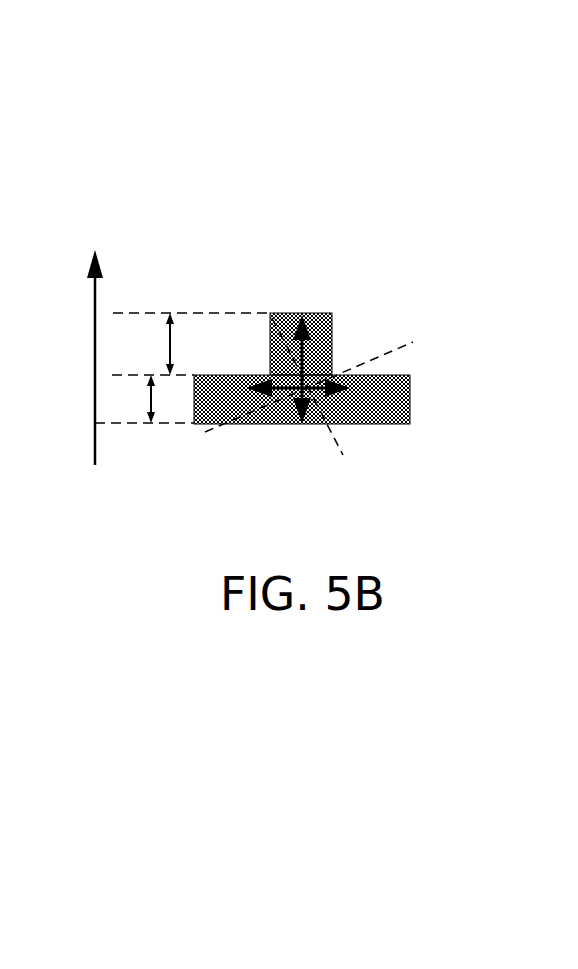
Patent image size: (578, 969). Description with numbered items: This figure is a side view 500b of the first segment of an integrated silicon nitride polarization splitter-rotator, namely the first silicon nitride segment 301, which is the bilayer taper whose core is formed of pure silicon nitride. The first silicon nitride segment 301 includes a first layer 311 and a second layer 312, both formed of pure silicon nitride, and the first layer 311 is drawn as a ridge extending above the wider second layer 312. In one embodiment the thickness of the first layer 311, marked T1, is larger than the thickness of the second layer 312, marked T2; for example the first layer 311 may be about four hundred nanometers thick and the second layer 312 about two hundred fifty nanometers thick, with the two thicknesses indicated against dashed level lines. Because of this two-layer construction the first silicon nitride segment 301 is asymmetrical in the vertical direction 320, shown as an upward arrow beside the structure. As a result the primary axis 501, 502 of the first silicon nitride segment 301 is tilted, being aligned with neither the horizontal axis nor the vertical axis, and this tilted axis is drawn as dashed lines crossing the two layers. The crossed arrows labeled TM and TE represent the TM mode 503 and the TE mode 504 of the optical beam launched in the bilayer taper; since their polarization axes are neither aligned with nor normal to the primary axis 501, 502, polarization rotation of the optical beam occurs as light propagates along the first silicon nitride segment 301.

The structure 500b is at (455, 103).
The first silicon nitride segment 301 is at (270, 348).
The first layer 311 is at (300, 312).
The second layer 312 is at (373, 405).
The vertical direction 320 is at (71, 357).
The primary axis 501 is at (232, 423).
The primary axis 502 is at (325, 415).
The TM mode 503 is at (303, 358).
The TE mode 504 is at (320, 388).
The thickness T1 is at (155, 344).
The thickness T2 is at (137, 399).
The TM mode arrow TM is at (319, 369).
The TE mode arrow TE is at (352, 412).